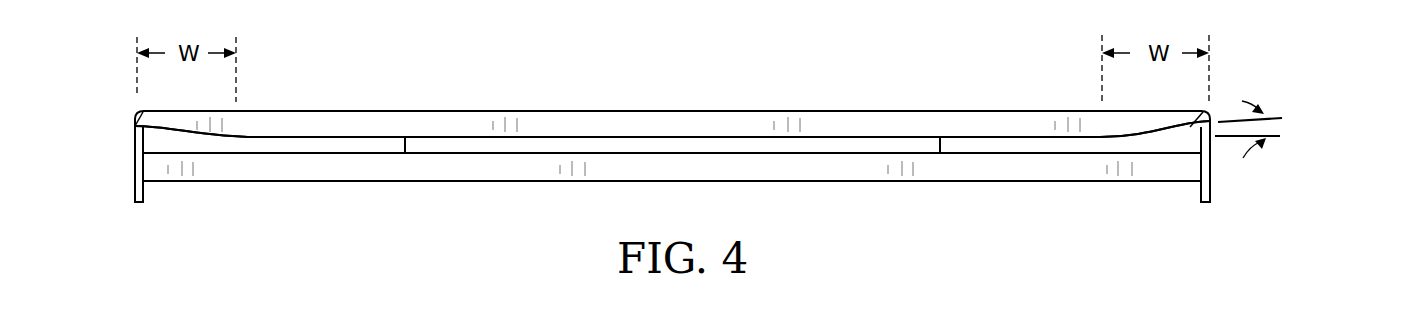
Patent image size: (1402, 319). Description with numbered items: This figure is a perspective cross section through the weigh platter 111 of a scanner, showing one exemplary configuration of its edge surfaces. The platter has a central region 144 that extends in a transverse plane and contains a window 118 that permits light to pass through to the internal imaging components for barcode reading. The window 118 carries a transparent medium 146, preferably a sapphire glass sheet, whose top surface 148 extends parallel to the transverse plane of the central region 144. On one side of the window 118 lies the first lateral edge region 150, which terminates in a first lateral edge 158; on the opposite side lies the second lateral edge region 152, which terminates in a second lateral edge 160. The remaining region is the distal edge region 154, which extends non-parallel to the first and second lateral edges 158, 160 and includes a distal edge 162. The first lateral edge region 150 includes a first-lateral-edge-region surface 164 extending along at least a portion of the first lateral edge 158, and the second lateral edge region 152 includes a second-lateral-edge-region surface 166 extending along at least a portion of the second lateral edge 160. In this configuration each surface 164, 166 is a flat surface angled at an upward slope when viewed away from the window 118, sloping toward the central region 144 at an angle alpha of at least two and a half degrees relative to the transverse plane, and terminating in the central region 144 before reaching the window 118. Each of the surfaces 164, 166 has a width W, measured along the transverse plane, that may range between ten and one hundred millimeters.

The weigh platter 111 is at (340, 86).
The window 118 is at (757, 136).
The central region 144 is at (530, 166).
The transparent medium 146 is at (673, 136).
The top surface 148 is at (598, 136).
The first lateral edge region 150 is at (1301, 117).
The second lateral edge region 152 is at (100, 121).
The distal edge region 154 is at (486, 70).
The first lateral edge 158 is at (1210, 176).
The second lateral edge 160 is at (135, 167).
The distal edge 162 is at (818, 118).
The first-lateral-edge-region surface 164 is at (1203, 111).
The second-lateral-edge-region surface 166 is at (165, 128).